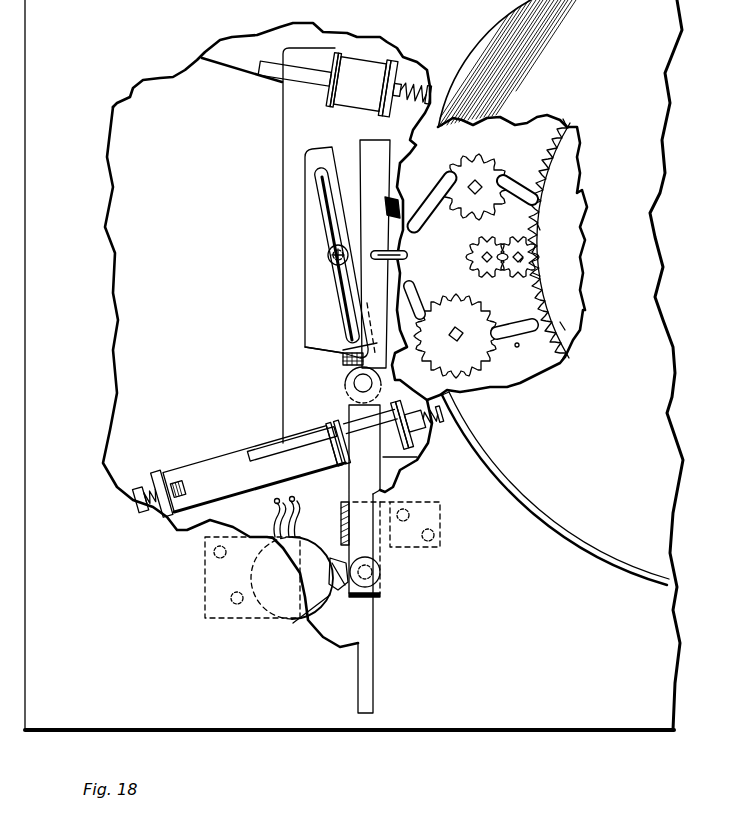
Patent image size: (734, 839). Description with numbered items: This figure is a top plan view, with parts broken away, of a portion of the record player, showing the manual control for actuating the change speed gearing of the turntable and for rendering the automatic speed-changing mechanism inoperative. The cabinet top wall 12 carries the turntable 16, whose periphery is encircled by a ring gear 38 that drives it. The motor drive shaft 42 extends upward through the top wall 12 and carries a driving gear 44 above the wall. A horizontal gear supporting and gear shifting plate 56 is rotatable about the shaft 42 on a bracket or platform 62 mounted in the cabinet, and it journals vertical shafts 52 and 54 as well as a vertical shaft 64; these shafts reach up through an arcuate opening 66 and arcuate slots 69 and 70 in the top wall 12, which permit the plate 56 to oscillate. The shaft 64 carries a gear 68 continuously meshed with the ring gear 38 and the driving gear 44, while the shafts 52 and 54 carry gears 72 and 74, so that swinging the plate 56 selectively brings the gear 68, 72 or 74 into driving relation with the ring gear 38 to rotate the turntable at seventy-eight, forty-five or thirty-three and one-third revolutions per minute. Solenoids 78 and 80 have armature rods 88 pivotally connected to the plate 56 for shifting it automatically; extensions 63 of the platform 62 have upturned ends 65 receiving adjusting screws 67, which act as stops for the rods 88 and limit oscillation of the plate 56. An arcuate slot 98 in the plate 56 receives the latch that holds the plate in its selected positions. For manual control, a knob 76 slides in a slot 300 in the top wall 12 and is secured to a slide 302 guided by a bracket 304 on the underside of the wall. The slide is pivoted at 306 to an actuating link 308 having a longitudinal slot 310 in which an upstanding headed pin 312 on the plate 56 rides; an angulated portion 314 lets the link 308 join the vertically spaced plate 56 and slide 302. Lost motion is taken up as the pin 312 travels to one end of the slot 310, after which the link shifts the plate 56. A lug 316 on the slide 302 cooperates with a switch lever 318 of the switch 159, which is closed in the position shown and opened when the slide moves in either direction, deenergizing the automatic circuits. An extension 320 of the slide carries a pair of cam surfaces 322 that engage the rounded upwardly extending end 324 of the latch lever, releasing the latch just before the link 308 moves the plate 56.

The top wall 12 is at (537, 123).
The turntable 16 is at (565, 330).
The ring gear 38 is at (555, 155).
The drive shaft 42 is at (472, 253).
The driving gear 44 is at (483, 277).
The vertical shaft 52 is at (477, 183).
The vertical shaft 54 is at (460, 340).
The gear supporting and gear shifting plate 56 is at (313, 335).
The bracket or platform 62 is at (295, 393).
The extensions 63 is at (235, 50).
The vertical shaft 64 is at (523, 258).
The upturned ends 65 is at (165, 470).
The arcuate opening 66 is at (537, 223).
The adjusting screws 67 is at (150, 487).
The gear 68 is at (533, 273).
The arcuate slot 69 is at (425, 193).
The arcuate slot 70 is at (517, 343).
The gear 72 is at (455, 208).
The gear 74 is at (457, 300).
The manual actuating knob 76 is at (372, 571).
The solenoid member 78 is at (367, 77).
The solenoid member 80 is at (417, 457).
The rod 88 is at (293, 77).
The arcuate slot 98 is at (397, 217).
The switch 159 is at (307, 573).
The slot 300 is at (372, 700).
The slide 302 is at (357, 467).
The guide bracket or support 304 is at (340, 520).
The pivot 306 is at (356, 386).
The actuating link 308 is at (318, 223).
The slot 310 is at (322, 183).
The headed pin 312 is at (325, 257).
The angulated portion 314 is at (350, 363).
The lug 316 is at (343, 587).
The switch lever 318 is at (303, 613).
The extension 320 is at (377, 343).
The cam surfaces 322 is at (388, 160).
The upwardly extending end 324 is at (406, 254).